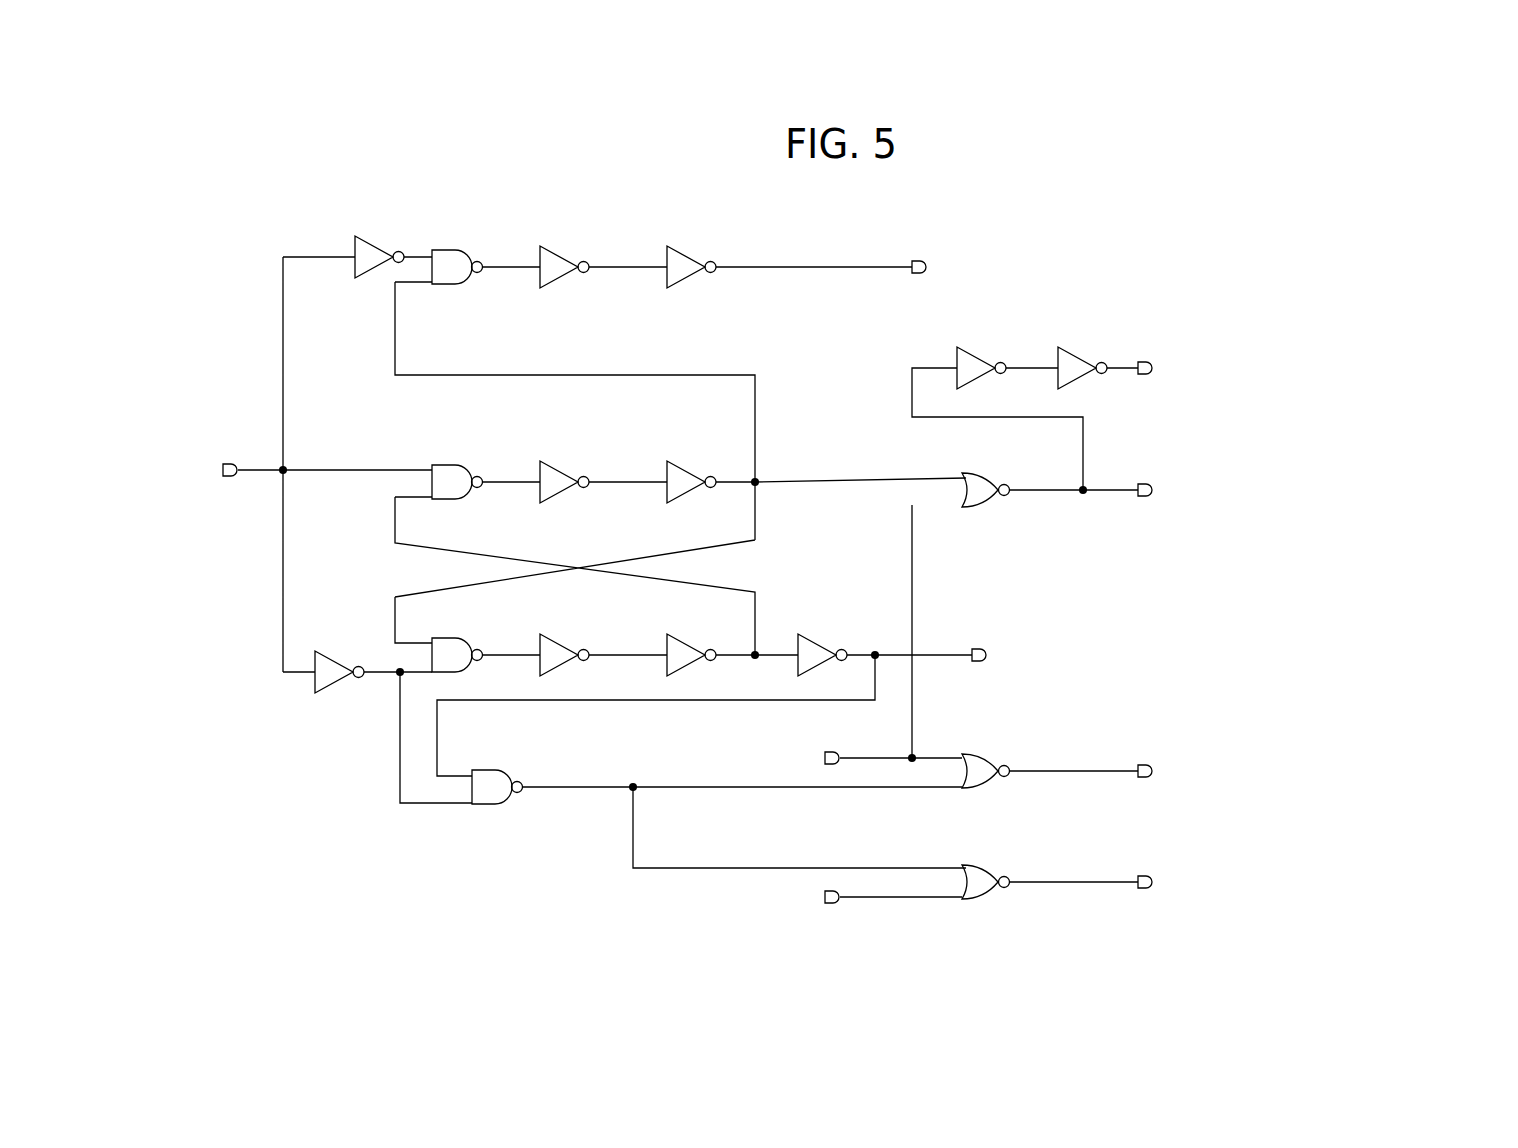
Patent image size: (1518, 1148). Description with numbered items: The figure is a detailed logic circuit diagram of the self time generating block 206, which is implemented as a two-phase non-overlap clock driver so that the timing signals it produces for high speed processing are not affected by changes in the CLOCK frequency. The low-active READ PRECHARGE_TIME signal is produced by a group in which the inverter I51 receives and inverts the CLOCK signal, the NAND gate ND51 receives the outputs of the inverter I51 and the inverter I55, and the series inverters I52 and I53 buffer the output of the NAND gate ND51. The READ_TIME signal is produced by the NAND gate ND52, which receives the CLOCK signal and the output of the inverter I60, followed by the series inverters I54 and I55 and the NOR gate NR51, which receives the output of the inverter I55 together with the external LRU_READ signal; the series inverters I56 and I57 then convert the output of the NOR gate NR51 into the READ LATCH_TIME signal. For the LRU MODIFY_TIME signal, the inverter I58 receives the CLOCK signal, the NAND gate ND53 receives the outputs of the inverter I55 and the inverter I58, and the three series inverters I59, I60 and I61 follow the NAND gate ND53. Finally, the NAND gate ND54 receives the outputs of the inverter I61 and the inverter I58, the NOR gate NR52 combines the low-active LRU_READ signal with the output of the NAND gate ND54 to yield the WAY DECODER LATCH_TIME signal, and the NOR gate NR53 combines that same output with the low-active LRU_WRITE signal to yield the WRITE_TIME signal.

The self time generating block 206 is at (1289, 245).
The inverter I51 is at (374, 245).
The NAND gate ND51 is at (471, 236).
The inverter I52 is at (558, 251).
The inverter I53 is at (686, 251).
The inverter I54 is at (558, 464).
The inverter I55 is at (686, 464).
The inverter I56 is at (976, 356).
The inverter I57 is at (1077, 356).
The inverter I58 is at (334, 655).
The inverter I59 is at (558, 636).
The inverter I60 is at (686, 636).
The inverter I61 is at (816, 636).
The NAND gate ND52 is at (471, 450).
The NAND gate ND53 is at (471, 624).
The NAND gate ND54 is at (505, 771).
The NOR gate NR51 is at (990, 478).
The NOR gate NR52 is at (990, 757).
The NOR gate NR53 is at (990, 866).